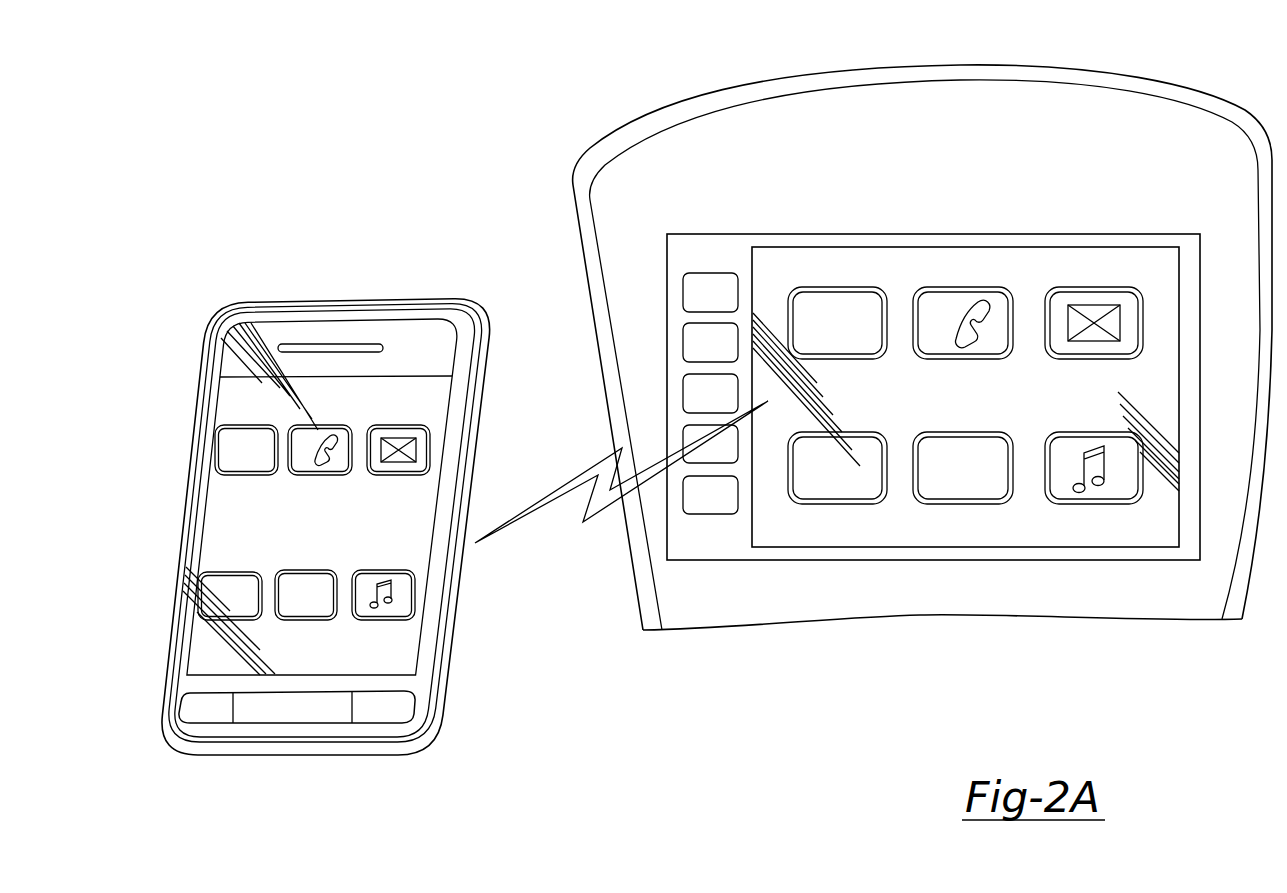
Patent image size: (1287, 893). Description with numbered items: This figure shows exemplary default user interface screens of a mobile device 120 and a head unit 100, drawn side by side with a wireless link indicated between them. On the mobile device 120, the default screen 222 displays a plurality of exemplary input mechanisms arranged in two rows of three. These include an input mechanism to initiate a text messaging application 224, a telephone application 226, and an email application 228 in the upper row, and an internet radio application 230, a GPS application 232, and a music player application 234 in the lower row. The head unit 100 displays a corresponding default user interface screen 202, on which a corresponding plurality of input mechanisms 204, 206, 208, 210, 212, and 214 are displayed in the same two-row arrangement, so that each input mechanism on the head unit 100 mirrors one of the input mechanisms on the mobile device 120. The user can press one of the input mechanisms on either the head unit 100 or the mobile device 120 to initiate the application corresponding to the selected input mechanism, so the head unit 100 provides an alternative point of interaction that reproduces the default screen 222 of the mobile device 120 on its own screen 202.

The head unit 100 is at (893, 233).
The mobile device 120 is at (246, 286).
The default user interface screen 202 is at (1044, 411).
The input mechanism 204 is at (839, 287).
The input mechanism 206 is at (973, 359).
The input mechanism 208 is at (1078, 287).
The input mechanism 210 is at (857, 432).
The input mechanism 212 is at (958, 432).
The input mechanism 214 is at (1088, 432).
The default screen 222 is at (370, 545).
The text messaging application input mechanism 224 is at (220, 437).
The telephone application input mechanism 226 is at (323, 431).
The email application input mechanism 228 is at (427, 447).
The internet radio application input mechanism 230 is at (223, 572).
The GPS application input mechanism 232 is at (307, 570).
The music player application input mechanism 234 is at (414, 597).